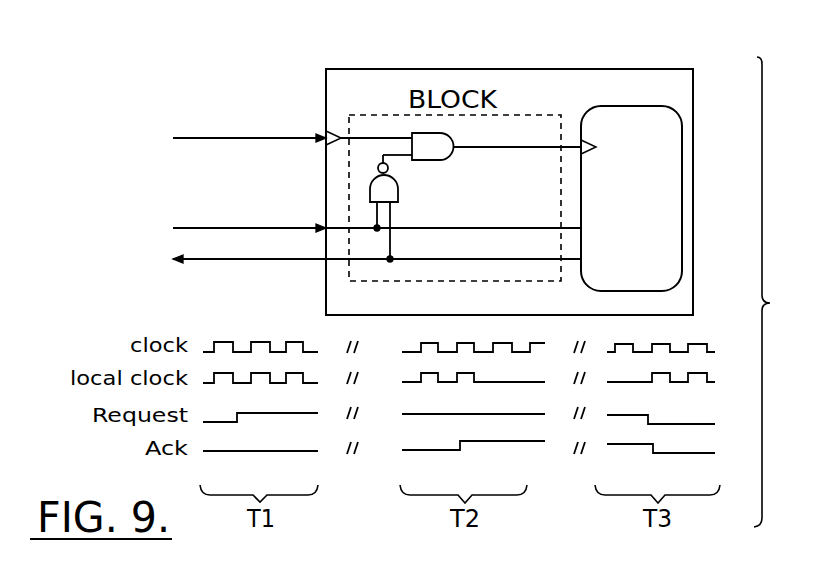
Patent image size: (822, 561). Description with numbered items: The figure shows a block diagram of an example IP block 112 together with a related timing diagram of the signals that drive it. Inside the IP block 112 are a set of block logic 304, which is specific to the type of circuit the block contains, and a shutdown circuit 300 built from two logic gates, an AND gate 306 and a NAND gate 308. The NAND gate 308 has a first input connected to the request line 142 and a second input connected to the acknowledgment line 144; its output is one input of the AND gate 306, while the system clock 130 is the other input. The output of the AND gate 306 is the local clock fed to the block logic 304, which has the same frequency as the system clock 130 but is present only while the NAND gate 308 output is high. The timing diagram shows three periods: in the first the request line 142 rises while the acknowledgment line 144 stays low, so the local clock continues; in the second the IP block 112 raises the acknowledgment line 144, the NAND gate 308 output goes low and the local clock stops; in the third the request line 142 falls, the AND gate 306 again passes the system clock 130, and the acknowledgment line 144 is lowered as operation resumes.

The IP block 112 is at (682, 80).
The system clock 130 is at (292, 140).
The request line 142 is at (377, 229).
The acknowledgment line 144 is at (377, 260).
The shutdown circuit 300 is at (526, 272).
The block logic 304 is at (658, 271).
The AND gate 306 is at (452, 157).
The NAND gate 308 is at (396, 184).